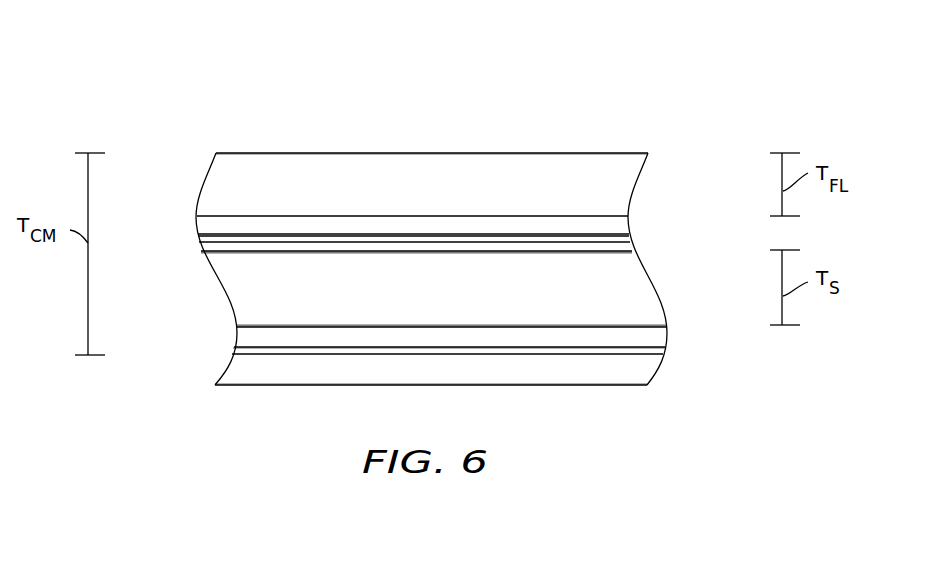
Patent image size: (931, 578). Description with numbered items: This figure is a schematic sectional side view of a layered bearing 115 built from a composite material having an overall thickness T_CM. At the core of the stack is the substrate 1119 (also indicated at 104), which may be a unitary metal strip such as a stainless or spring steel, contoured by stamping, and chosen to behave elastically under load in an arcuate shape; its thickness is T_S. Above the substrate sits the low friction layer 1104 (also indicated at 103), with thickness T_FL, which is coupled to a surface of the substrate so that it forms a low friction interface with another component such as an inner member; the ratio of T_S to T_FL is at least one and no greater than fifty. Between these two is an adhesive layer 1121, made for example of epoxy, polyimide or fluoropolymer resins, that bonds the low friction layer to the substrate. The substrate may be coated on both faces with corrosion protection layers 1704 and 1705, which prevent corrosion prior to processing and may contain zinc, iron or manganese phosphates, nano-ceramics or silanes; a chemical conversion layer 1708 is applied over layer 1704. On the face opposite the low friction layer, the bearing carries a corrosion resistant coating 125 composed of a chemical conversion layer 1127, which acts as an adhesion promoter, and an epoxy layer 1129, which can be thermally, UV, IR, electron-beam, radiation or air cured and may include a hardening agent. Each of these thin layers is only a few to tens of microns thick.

The magnetic recording medium 115 is at (667, 85).
The functional layer 103 is at (653, 150).
The low friction layer 1104 is at (199, 183).
The adhesive layer 1121 is at (197, 228).
The chemical conversion layer 1708 is at (633, 236).
The corrosion protection layer 1704 is at (636, 247).
The substrate 1119 is at (217, 277).
The substrate 104 is at (665, 304).
The corrosion protection layer 1705 is at (667, 328).
The chemical conversion layer 1127 is at (233, 346).
The epoxy layer 1129 is at (222, 378).
The bottom layers 125 is at (674, 345).